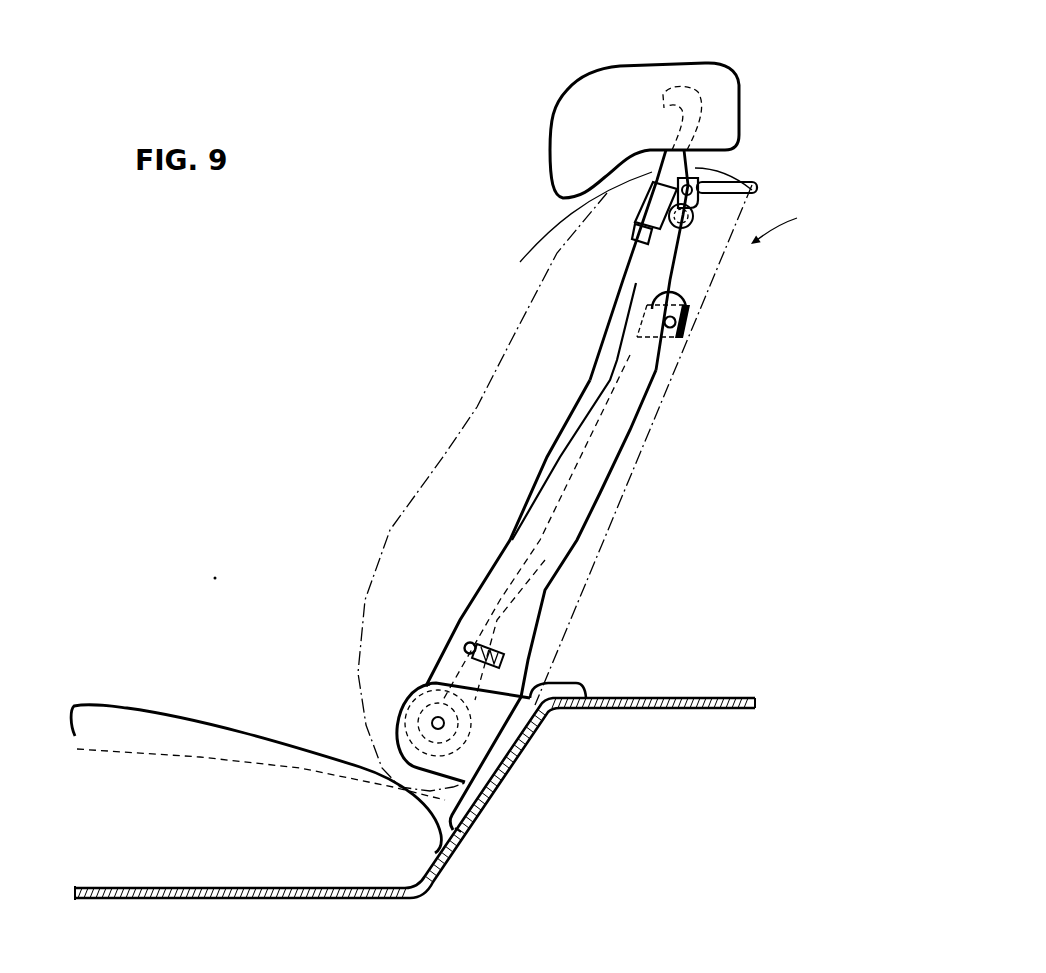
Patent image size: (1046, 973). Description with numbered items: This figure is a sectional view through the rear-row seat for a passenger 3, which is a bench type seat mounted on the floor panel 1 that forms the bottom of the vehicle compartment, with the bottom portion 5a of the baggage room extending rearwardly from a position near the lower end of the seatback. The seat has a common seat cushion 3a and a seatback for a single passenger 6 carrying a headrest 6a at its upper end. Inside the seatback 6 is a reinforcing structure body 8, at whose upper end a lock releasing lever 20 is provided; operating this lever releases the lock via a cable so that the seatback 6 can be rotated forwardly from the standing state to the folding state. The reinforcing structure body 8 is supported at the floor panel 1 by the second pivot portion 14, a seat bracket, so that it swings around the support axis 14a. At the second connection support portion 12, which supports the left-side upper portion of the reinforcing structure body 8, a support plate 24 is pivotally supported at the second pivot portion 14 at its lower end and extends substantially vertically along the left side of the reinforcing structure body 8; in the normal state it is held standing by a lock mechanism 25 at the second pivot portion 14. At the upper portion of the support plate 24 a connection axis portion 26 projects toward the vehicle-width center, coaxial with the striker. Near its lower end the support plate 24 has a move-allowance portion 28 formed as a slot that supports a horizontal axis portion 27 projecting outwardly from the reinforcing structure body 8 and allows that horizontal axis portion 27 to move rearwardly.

The floor panel 1 is at (262, 891).
The seat for a passenger 3 is at (783, 226).
The seat cushion 3a is at (131, 720).
The bottom portion of the baggage room 5a is at (707, 697).
The seatback for a single passenger 6 is at (492, 377).
The headrest 6a is at (584, 86).
The reinforcing structure body 8 is at (634, 283).
The second connection support portion 12 is at (578, 527).
The second pivot portion 14 is at (488, 738).
The support axis 14a is at (434, 720).
The lock releasing lever 20 is at (731, 181).
The support plate 24 is at (617, 423).
The lock mechanism 25 is at (470, 848).
The connection axis portion 26 is at (677, 320).
The horizontal axis portion 27 is at (468, 642).
The move-allowance portion 28 is at (502, 652).